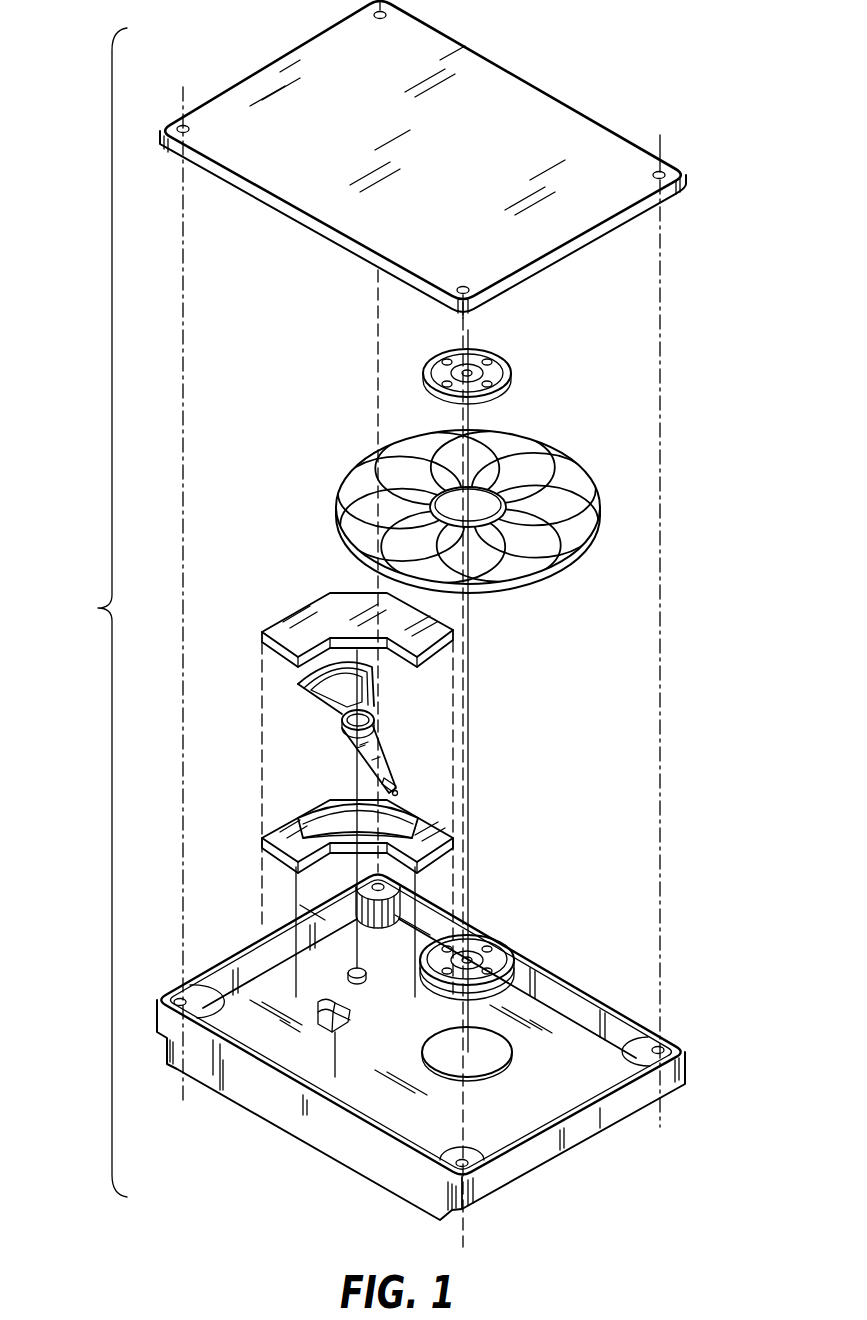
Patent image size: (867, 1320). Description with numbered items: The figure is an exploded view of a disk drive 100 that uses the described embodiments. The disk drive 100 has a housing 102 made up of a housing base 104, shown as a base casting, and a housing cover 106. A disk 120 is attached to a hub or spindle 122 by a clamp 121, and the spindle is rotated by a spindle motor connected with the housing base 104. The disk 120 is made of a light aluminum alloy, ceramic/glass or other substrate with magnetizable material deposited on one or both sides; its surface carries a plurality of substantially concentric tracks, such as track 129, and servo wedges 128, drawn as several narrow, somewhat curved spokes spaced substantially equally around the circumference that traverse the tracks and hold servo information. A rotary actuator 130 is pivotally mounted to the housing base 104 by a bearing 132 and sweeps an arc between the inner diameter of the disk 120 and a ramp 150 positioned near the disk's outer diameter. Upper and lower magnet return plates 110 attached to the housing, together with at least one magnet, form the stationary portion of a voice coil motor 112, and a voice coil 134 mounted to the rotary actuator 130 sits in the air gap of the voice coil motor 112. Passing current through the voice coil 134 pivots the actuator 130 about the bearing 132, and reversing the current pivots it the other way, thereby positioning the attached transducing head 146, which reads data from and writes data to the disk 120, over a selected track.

The disk drive 100 is at (684, 484).
The housing 102 is at (95, 612).
The housing base 104 is at (267, 1105).
The housing cover 106 is at (512, 88).
The upper and lower magnet return plates 110 is at (283, 658).
The voice coil motor 112 is at (325, 715).
The disk 120 is at (485, 500).
The clamp 121 is at (503, 362).
The hub or spindle 122 is at (482, 940).
The servo wedges 128 is at (594, 518).
The track 129 is at (555, 493).
The rotary actuator 130 is at (403, 728).
The bearing 132 is at (376, 720).
The voice coil 134 is at (318, 706).
The transducing head 146 is at (395, 783).
The ramp 150 is at (358, 1020).